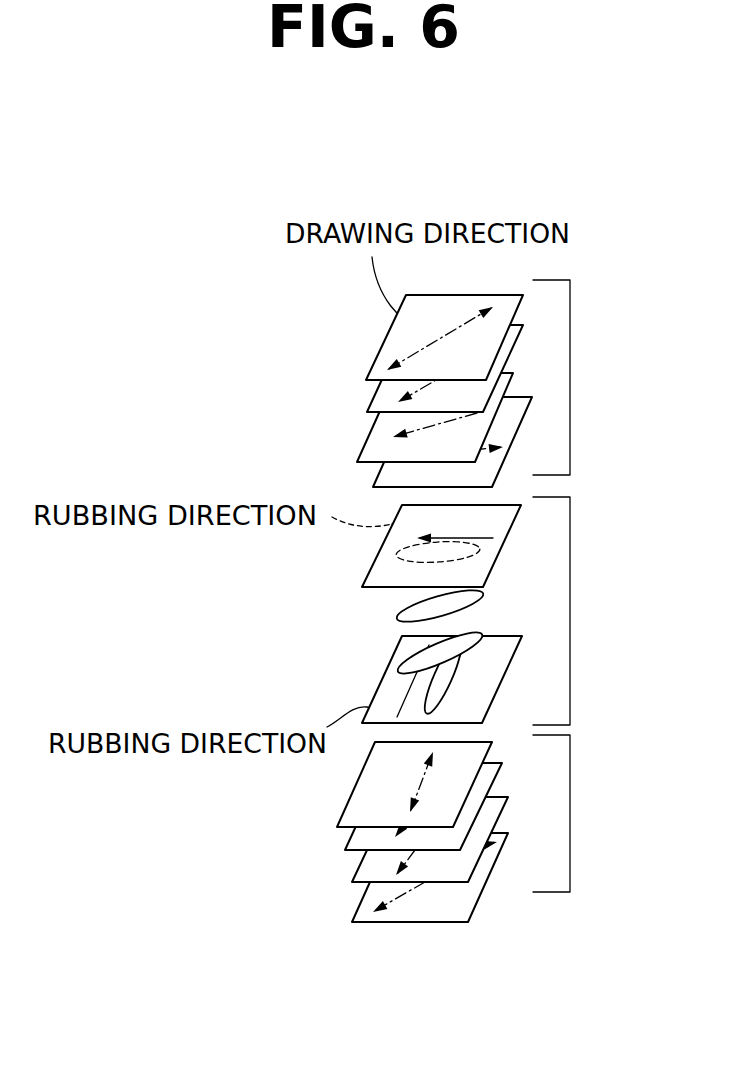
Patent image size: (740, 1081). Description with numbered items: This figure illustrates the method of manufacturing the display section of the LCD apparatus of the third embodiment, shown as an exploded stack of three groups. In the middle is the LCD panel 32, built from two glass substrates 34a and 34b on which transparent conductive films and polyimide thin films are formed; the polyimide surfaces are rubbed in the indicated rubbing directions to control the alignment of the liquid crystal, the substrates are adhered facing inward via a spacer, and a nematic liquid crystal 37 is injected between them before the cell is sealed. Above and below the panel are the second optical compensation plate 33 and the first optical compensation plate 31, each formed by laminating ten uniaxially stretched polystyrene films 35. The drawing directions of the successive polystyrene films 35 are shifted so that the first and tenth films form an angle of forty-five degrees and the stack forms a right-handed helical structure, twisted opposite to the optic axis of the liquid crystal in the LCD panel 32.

The first optical compensation plate 31 is at (570, 795).
The LCD panel 32 is at (570, 612).
The second optical compensation plate 33 is at (570, 343).
The glass substrate 34a is at (371, 707).
The glass substrate 34b is at (367, 577).
The polystyrene film 35 is at (383, 343).
The nematic liquid crystal 37 is at (405, 662).